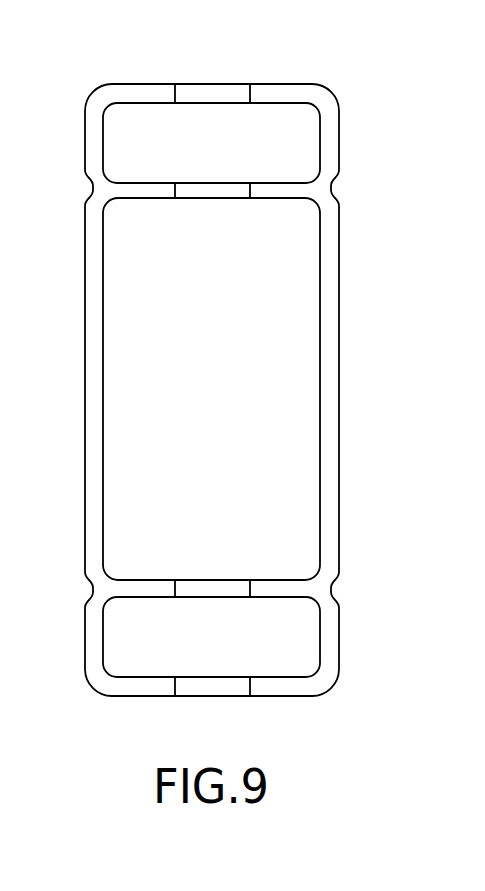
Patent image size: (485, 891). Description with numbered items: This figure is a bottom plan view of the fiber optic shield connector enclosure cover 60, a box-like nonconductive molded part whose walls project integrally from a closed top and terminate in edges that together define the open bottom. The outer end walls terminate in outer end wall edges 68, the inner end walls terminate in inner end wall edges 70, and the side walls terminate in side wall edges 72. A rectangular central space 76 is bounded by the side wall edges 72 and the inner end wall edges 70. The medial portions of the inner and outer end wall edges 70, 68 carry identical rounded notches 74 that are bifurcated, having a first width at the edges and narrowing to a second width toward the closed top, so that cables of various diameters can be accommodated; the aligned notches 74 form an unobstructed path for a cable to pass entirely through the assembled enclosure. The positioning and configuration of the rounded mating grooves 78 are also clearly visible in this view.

The cover 60 is at (209, 72).
The outer end wall edges 68 is at (278, 97).
The inner end wall edges 70 is at (146, 192).
The side wall edges 72 is at (95, 413).
The rounded notches 74 is at (212, 93).
The rectangular central space 76 is at (200, 395).
The rounded mating grooves 78 is at (87, 187).